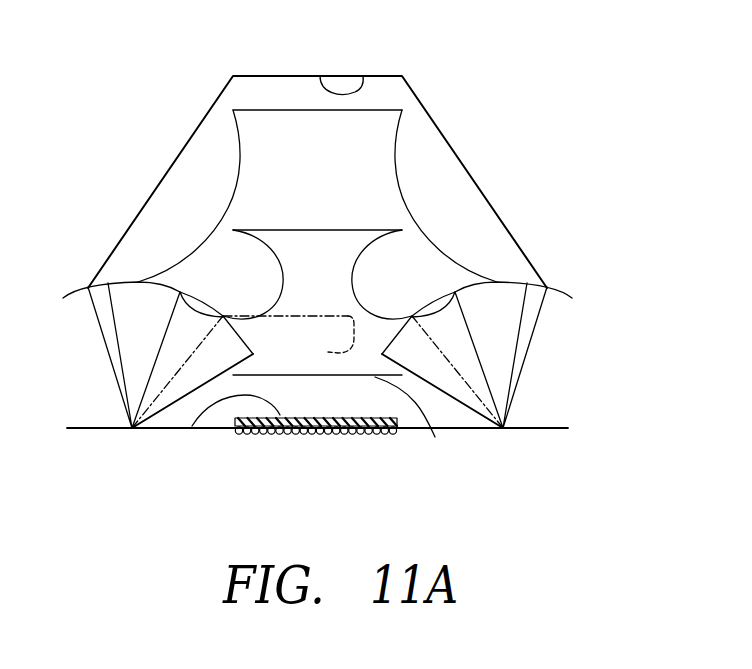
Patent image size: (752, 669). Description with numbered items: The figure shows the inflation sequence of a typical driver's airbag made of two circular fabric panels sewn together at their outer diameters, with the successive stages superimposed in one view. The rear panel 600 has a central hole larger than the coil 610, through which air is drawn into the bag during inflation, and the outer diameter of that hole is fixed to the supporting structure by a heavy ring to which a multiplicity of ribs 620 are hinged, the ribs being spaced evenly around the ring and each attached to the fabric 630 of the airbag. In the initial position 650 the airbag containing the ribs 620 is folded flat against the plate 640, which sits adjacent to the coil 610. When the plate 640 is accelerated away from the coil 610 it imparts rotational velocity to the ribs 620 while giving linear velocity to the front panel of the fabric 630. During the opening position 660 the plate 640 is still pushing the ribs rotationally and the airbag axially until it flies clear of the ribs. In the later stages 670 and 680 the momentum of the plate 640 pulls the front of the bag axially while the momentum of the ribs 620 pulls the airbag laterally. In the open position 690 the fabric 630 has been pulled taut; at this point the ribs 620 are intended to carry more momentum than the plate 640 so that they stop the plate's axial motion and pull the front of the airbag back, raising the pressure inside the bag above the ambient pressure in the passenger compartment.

The rear panel 600 is at (93, 429).
The coil 610 is at (353, 435).
The ribs 620 is at (110, 366).
The fabric 630 is at (153, 193).
The plate 640 is at (192, 426).
The initial position 650 is at (435, 437).
The opening position 660 is at (312, 345).
The intermediate position 670 is at (317, 230).
The intermediate position 680 is at (327, 110).
The open position 690 is at (363, 76).